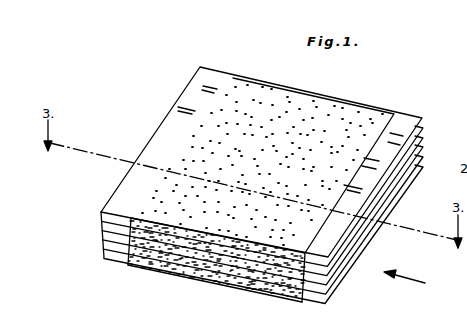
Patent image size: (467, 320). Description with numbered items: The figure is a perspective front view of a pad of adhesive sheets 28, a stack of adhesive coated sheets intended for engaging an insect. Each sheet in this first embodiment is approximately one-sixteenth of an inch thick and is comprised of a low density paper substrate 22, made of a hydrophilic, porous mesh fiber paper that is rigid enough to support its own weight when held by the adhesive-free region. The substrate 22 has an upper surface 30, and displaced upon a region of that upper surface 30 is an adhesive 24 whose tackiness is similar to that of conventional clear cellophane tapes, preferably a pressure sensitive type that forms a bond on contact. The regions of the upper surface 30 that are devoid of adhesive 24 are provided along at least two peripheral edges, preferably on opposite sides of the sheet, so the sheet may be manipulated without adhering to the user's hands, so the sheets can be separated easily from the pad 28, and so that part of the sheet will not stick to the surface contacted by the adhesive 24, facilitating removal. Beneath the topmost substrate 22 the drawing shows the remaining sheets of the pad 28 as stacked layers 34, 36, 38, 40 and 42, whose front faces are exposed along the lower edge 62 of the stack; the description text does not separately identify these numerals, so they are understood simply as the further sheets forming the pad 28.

The low density paper substrate 22 is at (106, 186).
The adhesive 24 is at (252, 90).
The pad of adhesive sheets 28 is at (414, 282).
The upper surface 30 is at (176, 122).
The first layer 34 is at (103, 217).
The second layer 36 is at (103, 228).
The third layer 38 is at (103, 237).
The fourth layer 40 is at (103, 247).
The fifth layer 42 is at (112, 253).
The bottom edge of layer stack 62 is at (213, 282).